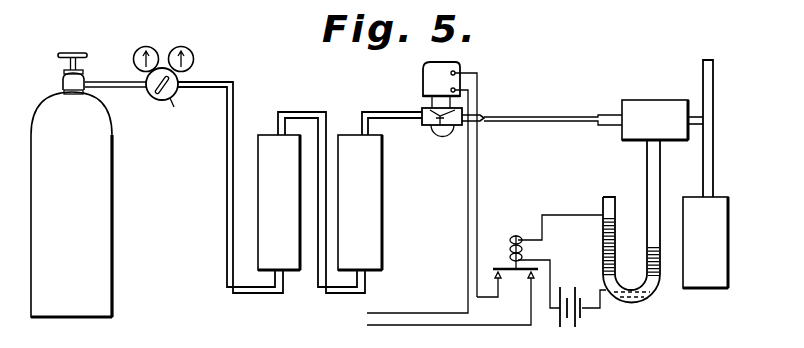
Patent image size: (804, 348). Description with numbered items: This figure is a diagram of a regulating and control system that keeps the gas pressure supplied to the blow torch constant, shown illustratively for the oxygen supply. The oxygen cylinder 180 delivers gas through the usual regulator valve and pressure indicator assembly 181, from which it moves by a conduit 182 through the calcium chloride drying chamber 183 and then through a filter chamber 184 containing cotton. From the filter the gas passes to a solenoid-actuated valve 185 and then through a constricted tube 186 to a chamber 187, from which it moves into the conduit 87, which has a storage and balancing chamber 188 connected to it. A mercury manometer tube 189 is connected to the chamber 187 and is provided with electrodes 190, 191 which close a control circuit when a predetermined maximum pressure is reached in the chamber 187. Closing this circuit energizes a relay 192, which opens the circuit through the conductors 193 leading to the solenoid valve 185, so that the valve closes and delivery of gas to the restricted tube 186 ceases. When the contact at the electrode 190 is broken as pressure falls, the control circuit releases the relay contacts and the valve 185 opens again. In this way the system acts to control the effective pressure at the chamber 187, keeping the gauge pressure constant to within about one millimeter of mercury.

The oxygen cylinder 180 is at (71, 185).
The regulator valve and pressure indicator assembly 181 is at (139, 96).
The conduit 182 is at (232, 83).
The calcium chloride drying chamber 183 is at (268, 210).
The filter chamber 184 is at (380, 186).
The solenoid-actuated valve 185 is at (438, 130).
The constricted tube 186 is at (527, 110).
The chamber 187 is at (659, 86).
The conduit 87 is at (713, 98).
The storage and balancing chamber 188 is at (715, 210).
The mercury manometer tube 189 is at (640, 301).
The electrode 190 is at (596, 215).
The electrode 191 is at (604, 296).
The relay 192 is at (473, 264).
The conductors 193 is at (476, 204).